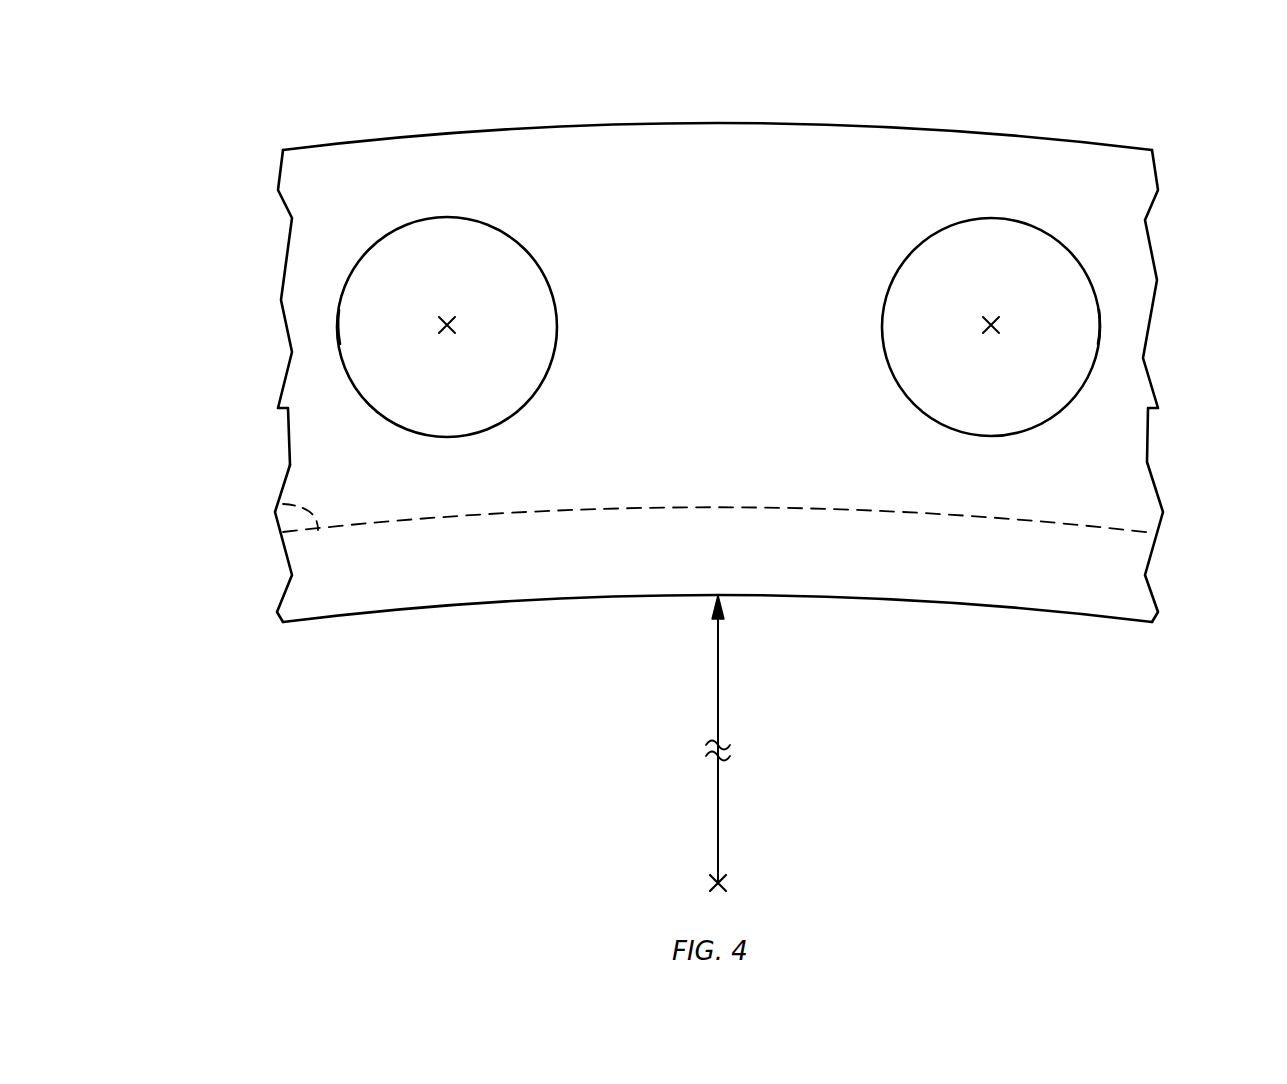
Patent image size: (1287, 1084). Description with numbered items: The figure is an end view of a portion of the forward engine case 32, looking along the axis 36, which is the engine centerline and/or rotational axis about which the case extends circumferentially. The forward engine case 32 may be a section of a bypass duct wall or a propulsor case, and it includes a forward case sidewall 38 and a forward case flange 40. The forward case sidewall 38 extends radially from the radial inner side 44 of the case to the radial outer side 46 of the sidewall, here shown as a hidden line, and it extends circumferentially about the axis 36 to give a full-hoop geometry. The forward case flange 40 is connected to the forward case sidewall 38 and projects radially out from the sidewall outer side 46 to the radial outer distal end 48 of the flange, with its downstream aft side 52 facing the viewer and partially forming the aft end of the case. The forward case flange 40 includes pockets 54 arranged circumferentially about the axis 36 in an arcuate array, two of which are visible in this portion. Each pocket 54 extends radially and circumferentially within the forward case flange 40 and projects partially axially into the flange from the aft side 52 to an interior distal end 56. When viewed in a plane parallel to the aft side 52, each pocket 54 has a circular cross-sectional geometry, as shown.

The forward engine case 32 is at (1200, 113).
The axis 36 is at (727, 884).
The forward case sidewall 38 is at (268, 576).
The forward case flange 40 is at (268, 221).
The radial inner side 44 is at (304, 622).
The radial outer side 46 is at (278, 504).
The radial outer distal end 48 is at (1056, 138).
The aft side 52 is at (1145, 220).
The pockets 54 is at (338, 305).
The interior distal end 56 is at (357, 343).